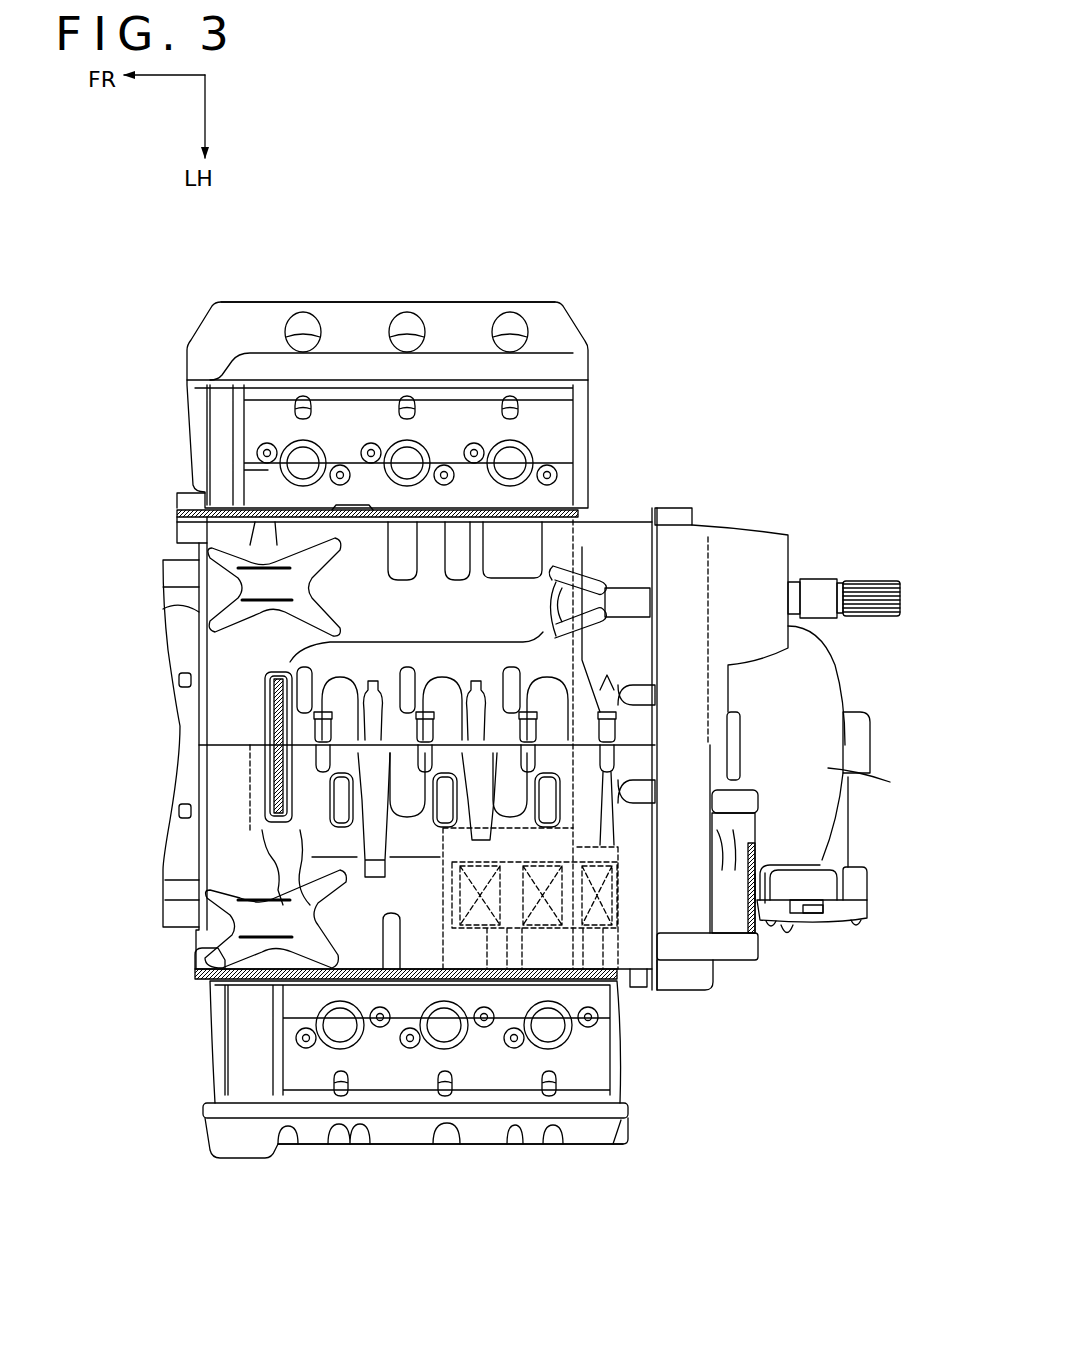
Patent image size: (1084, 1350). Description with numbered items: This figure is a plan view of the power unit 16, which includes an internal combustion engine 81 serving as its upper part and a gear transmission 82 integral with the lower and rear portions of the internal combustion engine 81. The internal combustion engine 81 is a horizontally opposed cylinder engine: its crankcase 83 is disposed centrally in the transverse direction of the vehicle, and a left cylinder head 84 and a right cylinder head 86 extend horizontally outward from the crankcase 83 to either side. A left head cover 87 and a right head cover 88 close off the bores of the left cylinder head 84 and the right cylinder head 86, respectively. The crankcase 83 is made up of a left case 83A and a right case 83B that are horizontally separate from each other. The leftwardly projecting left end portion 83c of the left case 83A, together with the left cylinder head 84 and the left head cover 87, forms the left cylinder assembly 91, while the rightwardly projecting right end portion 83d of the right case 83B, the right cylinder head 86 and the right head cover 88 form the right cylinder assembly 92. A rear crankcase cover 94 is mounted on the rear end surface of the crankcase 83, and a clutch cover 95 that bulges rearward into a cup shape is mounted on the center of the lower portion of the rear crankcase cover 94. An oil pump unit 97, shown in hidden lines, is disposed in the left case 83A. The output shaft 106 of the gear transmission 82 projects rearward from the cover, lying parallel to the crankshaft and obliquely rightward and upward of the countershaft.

The power unit 16 is at (512, 737).
The internal combustion engine 81 is at (391, 799).
The gear transmission 82 is at (863, 745).
The crankcase 83 is at (194, 755).
The left case 83A is at (216, 898).
The right case 83B is at (368, 592).
The left end portion 83c is at (215, 939).
The right end portion 83d is at (216, 573).
The left cylinder head 84 is at (371, 1120).
The right cylinder head 86 is at (354, 448).
The left head cover 87 is at (415, 1181).
The right head cover 88 is at (387, 297).
The left cylinder assembly 91 is at (450, 1202).
The right cylinder assembly 92 is at (389, 258).
The rear crankcase cover 94 is at (722, 708).
The clutch cover 95 is at (847, 850).
The oil pump unit 97 is at (570, 966).
The output shaft 106 is at (844, 545).